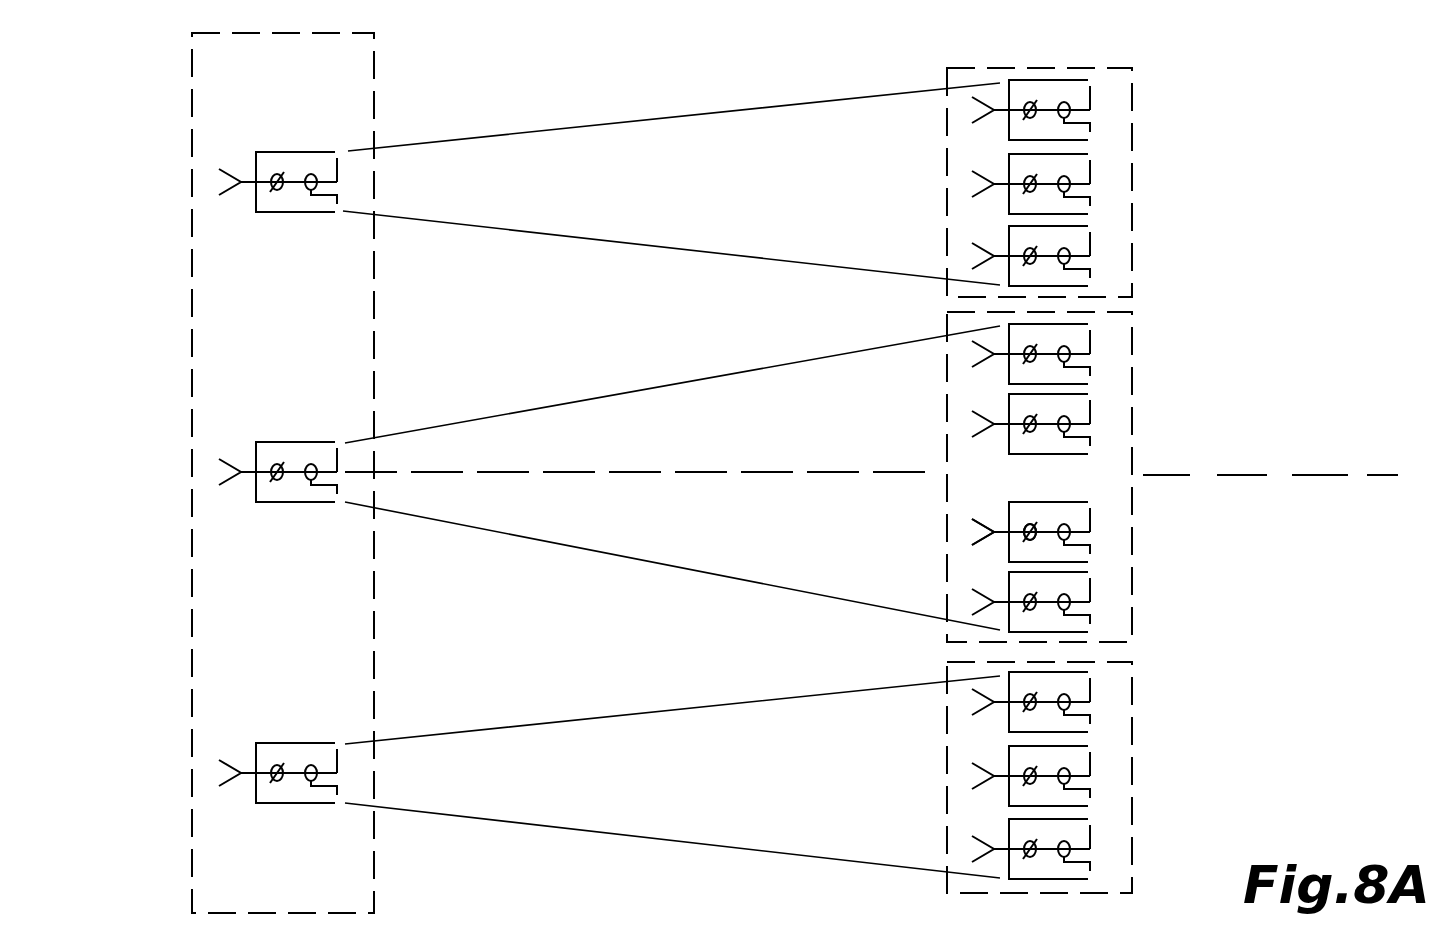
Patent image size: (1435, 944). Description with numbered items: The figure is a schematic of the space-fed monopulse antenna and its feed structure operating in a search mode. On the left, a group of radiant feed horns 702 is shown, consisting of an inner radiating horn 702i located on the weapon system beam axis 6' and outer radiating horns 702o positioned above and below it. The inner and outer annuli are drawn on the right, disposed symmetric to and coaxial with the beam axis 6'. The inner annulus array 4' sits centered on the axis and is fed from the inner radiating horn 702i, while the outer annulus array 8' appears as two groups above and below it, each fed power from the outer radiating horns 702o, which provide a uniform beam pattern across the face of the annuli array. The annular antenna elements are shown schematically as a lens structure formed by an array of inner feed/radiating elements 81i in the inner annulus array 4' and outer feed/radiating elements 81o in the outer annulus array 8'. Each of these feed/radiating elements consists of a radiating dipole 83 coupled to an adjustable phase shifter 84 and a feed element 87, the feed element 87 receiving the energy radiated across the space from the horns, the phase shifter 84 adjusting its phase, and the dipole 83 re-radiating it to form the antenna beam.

The radiant feed horns 702 is at (374, 352).
The outer radiating horns 702o is at (328, 152).
The inner radiating horn 702i is at (322, 502).
The outer annulus array 8' is at (1065, 472).
The outer feed/radiating elements 81o is at (1093, 127).
The inner annulus array 4' is at (1065, 477).
The inner feed/radiating elements 81i is at (1099, 375).
The adjustable phase shifter 84 is at (1033, 522).
The radiating dipole 83 is at (1093, 547).
The feed element 87 is at (972, 525).
The weapon system beam axis 6' is at (871, 454).